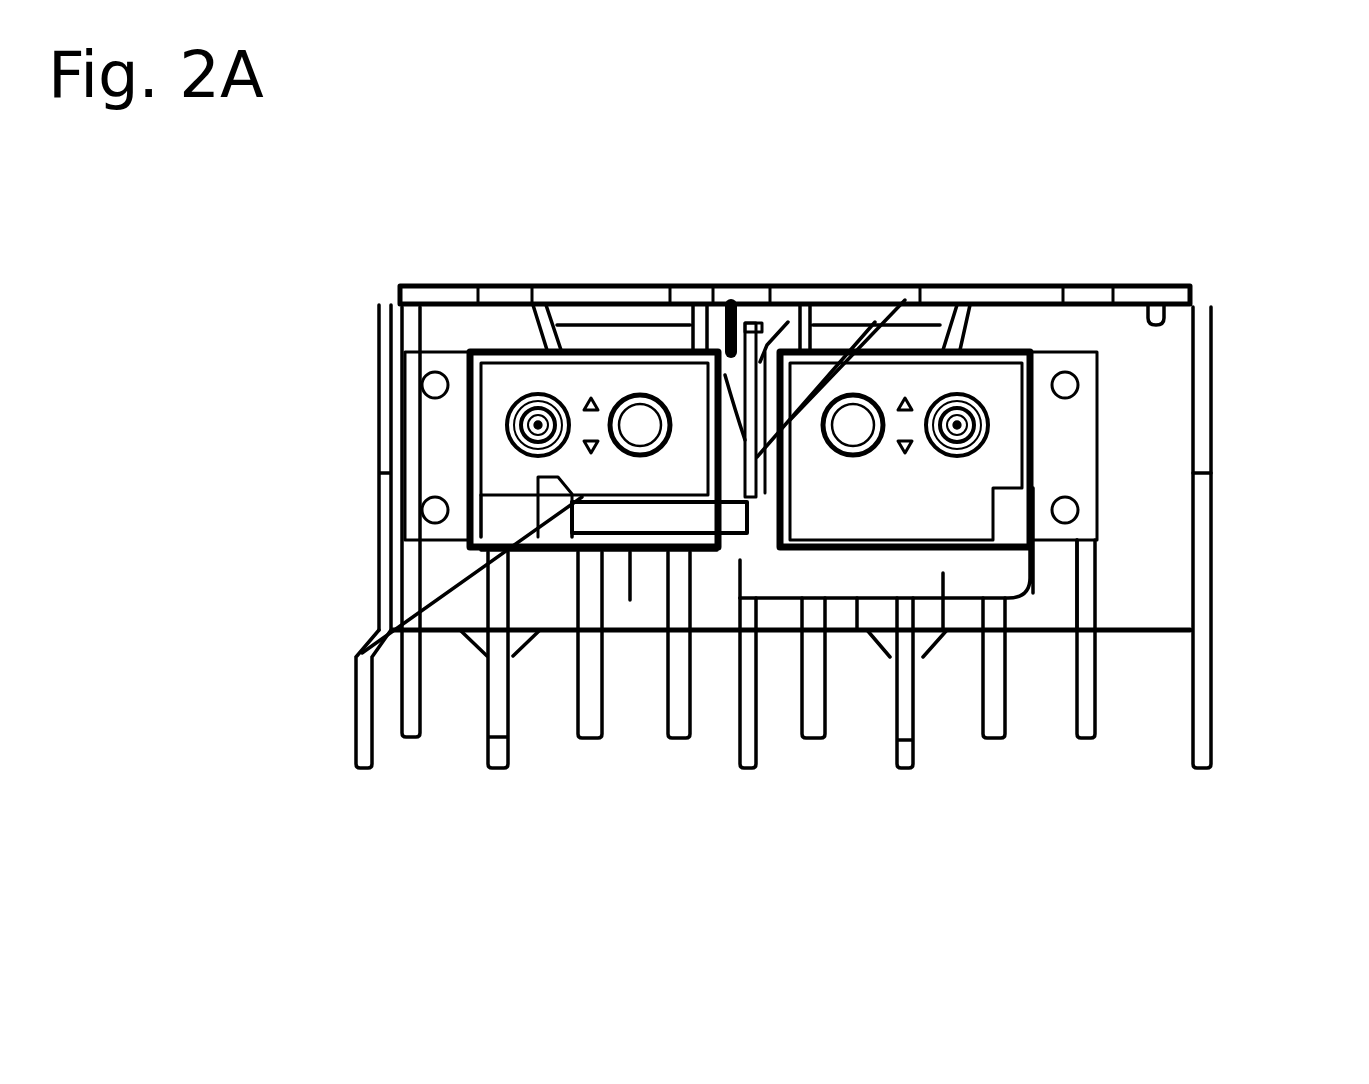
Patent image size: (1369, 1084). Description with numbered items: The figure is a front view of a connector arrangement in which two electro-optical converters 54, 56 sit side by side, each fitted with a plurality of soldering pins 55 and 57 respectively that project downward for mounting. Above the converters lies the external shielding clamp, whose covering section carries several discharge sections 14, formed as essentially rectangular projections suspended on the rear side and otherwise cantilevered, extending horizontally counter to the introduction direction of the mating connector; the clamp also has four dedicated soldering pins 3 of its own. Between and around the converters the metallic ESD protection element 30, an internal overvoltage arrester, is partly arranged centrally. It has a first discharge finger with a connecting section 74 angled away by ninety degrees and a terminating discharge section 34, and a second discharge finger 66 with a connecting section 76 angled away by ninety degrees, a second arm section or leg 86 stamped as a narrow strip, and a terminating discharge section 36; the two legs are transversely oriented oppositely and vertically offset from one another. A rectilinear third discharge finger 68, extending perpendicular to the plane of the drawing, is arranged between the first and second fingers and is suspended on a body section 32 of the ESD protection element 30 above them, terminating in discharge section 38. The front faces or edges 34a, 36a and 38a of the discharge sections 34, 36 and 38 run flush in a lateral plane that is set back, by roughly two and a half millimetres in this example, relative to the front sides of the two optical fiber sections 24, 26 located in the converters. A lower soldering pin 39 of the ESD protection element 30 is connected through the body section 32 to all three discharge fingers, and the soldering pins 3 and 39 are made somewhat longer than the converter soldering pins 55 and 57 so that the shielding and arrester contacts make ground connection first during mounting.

The soldering pin 3 is at (360, 768).
The discharge section 14 is at (501, 286).
The optical fiber section 24 is at (858, 455).
The optical fiber section 26 is at (655, 452).
The ESD protection element 30 is at (765, 352).
The body section 32 is at (788, 322).
The discharge section 34 is at (993, 492).
The front edge 34a is at (1030, 497).
The discharge section 36 is at (538, 510).
The front edge 36a is at (538, 490).
The discharge section 38 is at (875, 322).
The front edge 38a is at (908, 300).
The lower soldering pin 39 is at (743, 768).
The electro-optical converter 54 is at (997, 352).
The soldering pins 55 is at (813, 738).
The electro-optical converter 56 is at (650, 352).
The soldering pins 57 is at (677, 738).
The second discharge finger 66 is at (633, 553).
The third discharge finger 68 is at (730, 305).
The connecting section 74 is at (748, 577).
The connecting section 76 is at (740, 543).
The second leg 86 is at (555, 557).